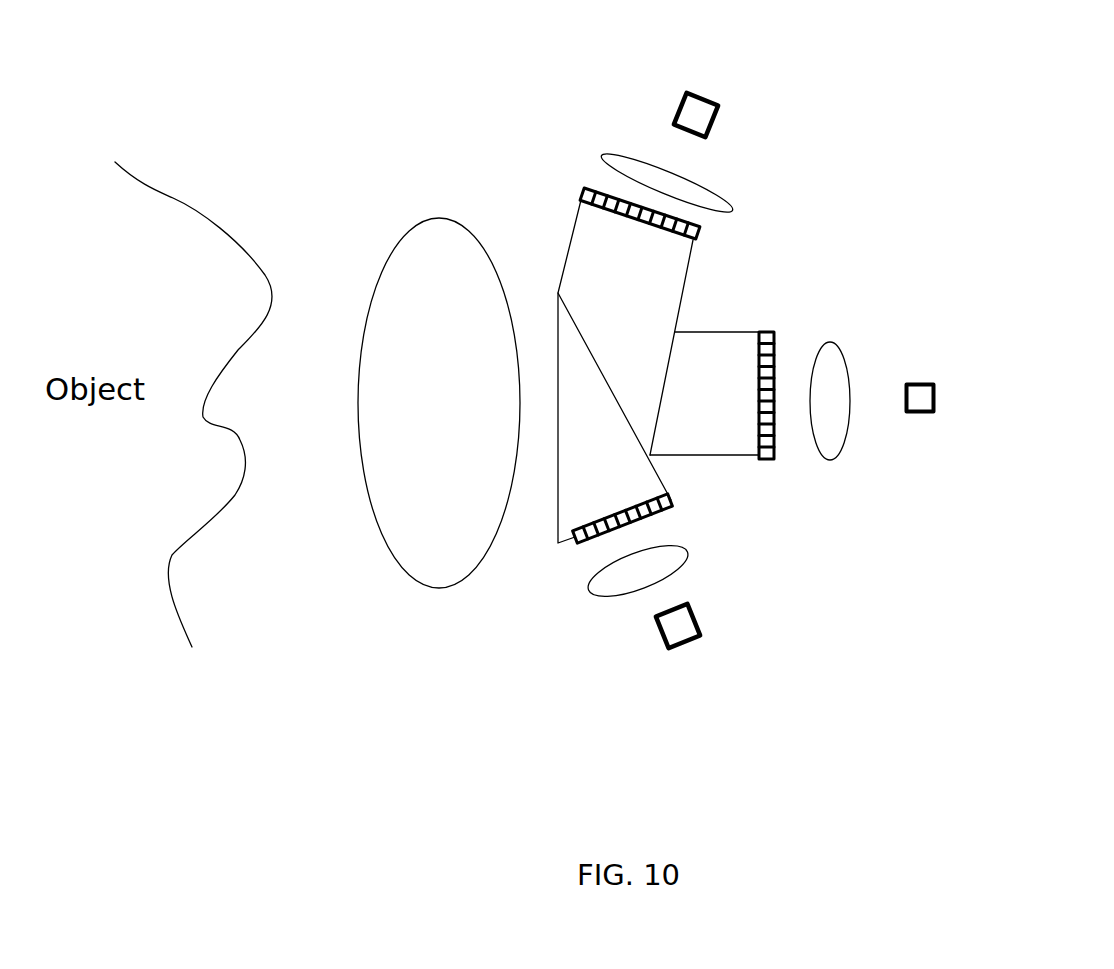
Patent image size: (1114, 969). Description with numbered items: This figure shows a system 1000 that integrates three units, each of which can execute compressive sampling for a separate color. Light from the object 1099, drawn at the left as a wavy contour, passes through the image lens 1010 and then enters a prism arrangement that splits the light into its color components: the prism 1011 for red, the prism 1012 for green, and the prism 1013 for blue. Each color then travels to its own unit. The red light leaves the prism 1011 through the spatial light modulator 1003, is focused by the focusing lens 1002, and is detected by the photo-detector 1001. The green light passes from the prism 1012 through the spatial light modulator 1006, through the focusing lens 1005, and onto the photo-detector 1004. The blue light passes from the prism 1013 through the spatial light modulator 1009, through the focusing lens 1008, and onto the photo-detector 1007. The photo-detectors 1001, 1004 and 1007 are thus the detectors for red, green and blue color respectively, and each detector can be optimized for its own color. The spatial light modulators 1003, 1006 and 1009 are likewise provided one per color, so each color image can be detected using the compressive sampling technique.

The system 1000 is at (1055, 68).
The object 1099 is at (174, 197).
The image lens 1010 is at (393, 257).
The prism 1011 is at (577, 240).
The prism 1012 is at (733, 332).
The spatial light modulator 1003 is at (703, 232).
The focusing lens 1002 is at (728, 195).
The photo-detector 1001 is at (708, 90).
The spatial light modulator 1006 is at (773, 463).
The focusing lens 1005 is at (838, 330).
The photo-detector 1004 is at (930, 372).
The prism 1013 is at (652, 475).
The spatial light modulator 1009 is at (575, 540).
The focusing lens 1008 is at (596, 595).
The photo-detector 1007 is at (673, 647).